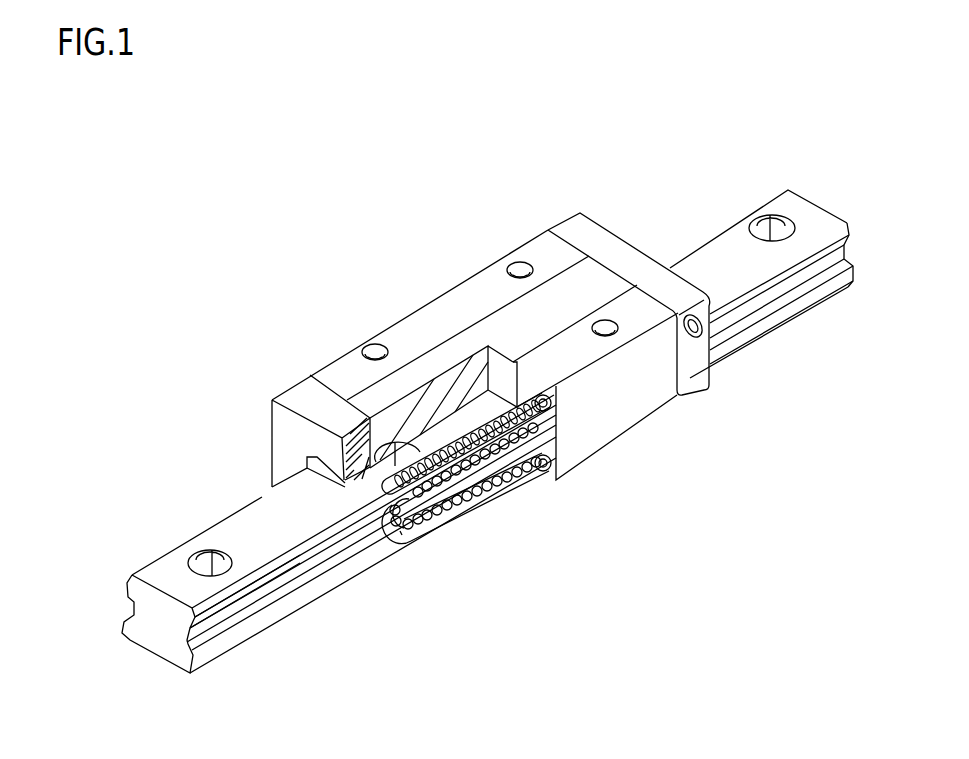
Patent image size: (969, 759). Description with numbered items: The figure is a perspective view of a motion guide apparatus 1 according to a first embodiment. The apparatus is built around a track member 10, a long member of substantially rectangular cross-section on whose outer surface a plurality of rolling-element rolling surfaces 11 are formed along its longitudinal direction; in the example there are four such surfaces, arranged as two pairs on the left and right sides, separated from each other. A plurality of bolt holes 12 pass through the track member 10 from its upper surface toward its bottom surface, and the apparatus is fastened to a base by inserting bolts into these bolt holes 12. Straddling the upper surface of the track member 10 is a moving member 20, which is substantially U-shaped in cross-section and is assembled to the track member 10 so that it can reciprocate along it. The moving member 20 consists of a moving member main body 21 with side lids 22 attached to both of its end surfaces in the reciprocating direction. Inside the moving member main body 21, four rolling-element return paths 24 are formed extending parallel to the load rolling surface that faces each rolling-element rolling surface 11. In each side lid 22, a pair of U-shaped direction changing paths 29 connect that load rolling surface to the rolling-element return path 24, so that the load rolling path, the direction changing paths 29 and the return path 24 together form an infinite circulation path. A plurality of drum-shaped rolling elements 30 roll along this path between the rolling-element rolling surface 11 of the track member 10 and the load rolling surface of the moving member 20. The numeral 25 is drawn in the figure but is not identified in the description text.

The motion guide apparatus 1 is at (668, 136).
The track member 10 is at (487, 461).
The rolling-element rolling surface 11 is at (275, 598).
The bolt hole 12 is at (215, 552).
The moving member 20 is at (208, 306).
The moving member main body 21 is at (480, 337).
The side lid 22 is at (578, 232).
The rolling-element return path 24 is at (557, 418).
The grease nipple mounting hole 25 is at (613, 333).
The direction changing path 29 is at (399, 545).
The rolling element 30 is at (442, 523).